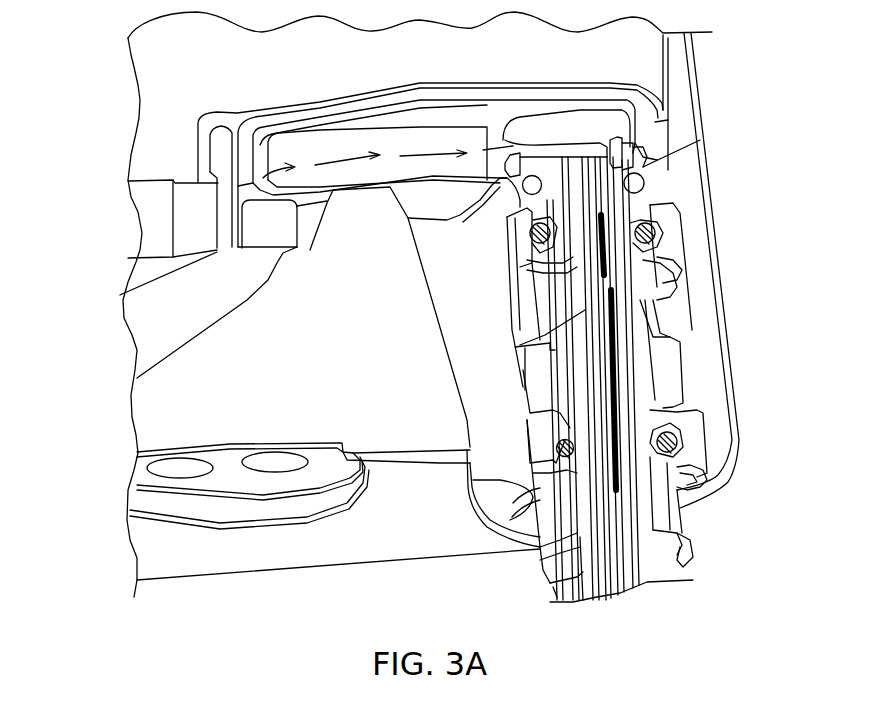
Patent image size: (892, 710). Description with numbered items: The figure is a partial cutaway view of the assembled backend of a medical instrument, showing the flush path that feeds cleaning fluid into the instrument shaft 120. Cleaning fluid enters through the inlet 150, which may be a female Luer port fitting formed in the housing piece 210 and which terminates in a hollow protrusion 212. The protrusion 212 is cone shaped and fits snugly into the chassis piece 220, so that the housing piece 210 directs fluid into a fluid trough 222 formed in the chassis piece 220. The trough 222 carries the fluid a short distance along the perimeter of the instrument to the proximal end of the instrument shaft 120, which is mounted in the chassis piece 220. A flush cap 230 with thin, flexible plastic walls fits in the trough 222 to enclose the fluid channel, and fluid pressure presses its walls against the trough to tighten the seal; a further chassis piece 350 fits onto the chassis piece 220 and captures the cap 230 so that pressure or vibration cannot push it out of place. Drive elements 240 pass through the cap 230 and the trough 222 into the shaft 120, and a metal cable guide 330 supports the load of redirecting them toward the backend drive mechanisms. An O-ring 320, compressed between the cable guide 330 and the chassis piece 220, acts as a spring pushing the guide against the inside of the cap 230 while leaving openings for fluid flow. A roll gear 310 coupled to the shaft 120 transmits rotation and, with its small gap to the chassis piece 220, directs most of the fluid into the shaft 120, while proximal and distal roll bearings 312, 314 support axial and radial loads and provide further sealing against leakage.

The instrument shaft 120 is at (675, 505).
The inlet 150 is at (283, 477).
The housing piece 210 is at (298, 492).
The hollow protrusion 212 is at (283, 237).
The chassis piece 220 is at (185, 225).
The fluid trough 222 is at (443, 228).
The flush cap 230 is at (668, 120).
The drive elements 240 is at (575, 300).
The roll gear 310 is at (662, 378).
The proximal roll bearing 312 is at (670, 233).
The distal roll bearing 314 is at (690, 445).
The O-ring 320 is at (645, 187).
The cable guide 330 is at (645, 160).
The chassis piece 350 is at (650, 70).